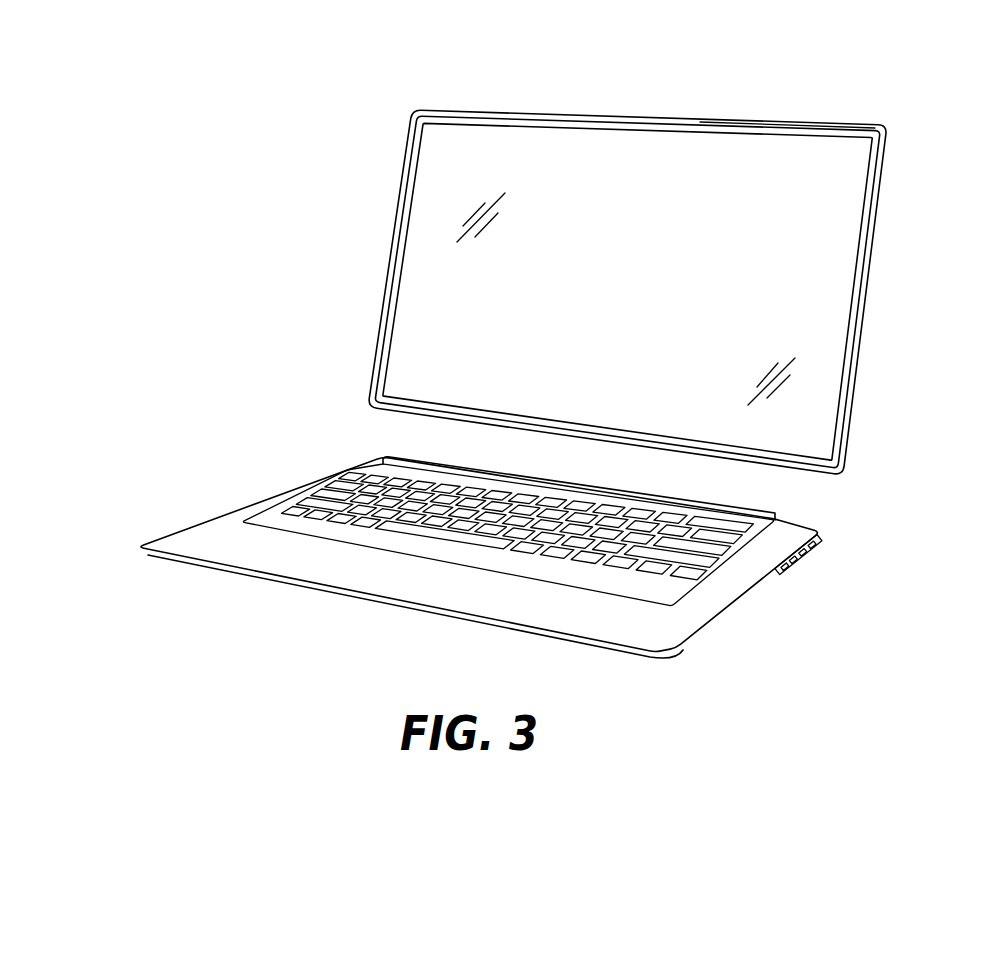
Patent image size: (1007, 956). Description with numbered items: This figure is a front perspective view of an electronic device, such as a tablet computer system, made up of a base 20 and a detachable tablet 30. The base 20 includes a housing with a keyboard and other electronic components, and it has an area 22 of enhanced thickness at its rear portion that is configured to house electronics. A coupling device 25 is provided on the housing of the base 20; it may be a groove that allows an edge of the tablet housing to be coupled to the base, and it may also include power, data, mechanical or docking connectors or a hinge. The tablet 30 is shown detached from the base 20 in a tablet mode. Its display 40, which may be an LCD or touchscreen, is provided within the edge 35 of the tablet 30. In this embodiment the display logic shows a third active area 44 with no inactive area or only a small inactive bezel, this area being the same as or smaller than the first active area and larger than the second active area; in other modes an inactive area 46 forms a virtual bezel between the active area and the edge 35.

The base 20 is at (693, 615).
The area of enhanced thickness 22 is at (823, 538).
The coupling device 25 is at (778, 518).
The tablet 30 is at (860, 350).
The edge 35 is at (876, 226).
The display 40 is at (615, 279).
The third active area 44 is at (753, 122).
The inactive area 46 is at (522, 124).